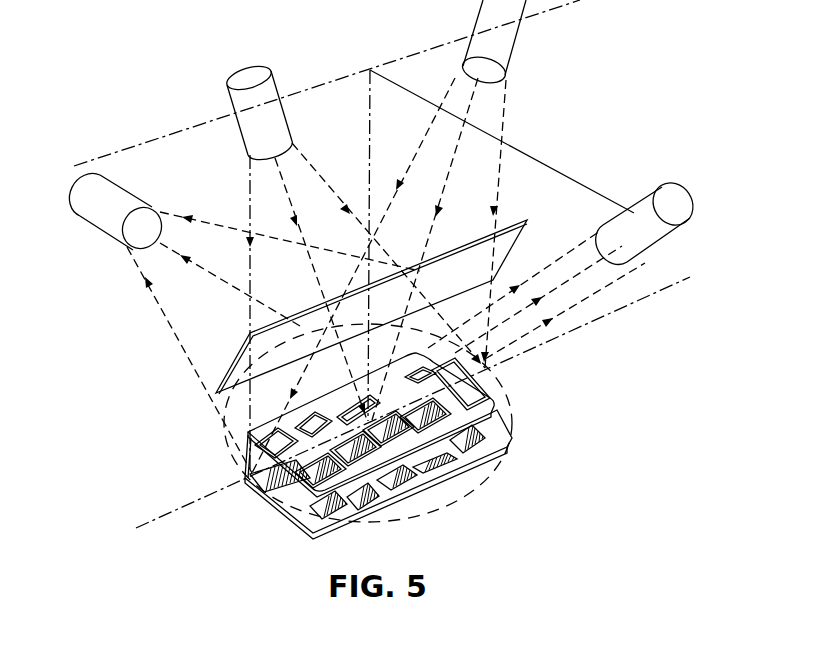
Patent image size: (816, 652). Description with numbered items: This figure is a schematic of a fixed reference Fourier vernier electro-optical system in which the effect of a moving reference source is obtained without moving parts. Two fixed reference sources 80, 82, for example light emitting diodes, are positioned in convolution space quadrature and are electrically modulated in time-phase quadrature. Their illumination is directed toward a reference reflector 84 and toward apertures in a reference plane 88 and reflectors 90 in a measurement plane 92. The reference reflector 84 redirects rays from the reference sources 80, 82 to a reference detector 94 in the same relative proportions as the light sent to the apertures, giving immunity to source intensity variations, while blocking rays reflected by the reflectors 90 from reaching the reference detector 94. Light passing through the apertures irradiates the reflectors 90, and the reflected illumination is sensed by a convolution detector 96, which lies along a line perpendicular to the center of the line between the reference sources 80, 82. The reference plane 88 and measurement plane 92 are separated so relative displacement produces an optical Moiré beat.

The fixed reference source 80 is at (271, 84).
The fixed reference source 82 is at (511, 51).
The reference reflector 84 is at (212, 393).
The reference plane 88 is at (262, 501).
The reflectors 90 is at (305, 535).
The measurement plane 92 is at (270, 514).
The reference detector 94 is at (100, 211).
The convolution detector 96 is at (680, 205).